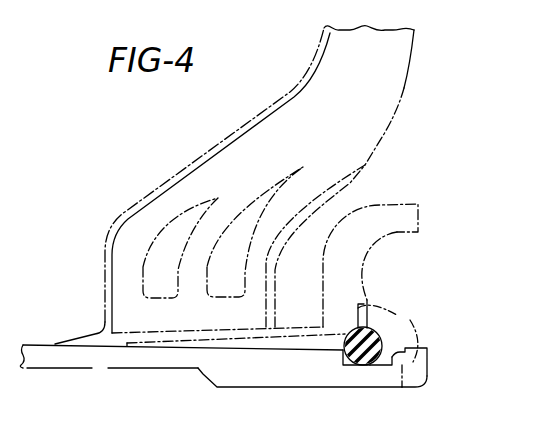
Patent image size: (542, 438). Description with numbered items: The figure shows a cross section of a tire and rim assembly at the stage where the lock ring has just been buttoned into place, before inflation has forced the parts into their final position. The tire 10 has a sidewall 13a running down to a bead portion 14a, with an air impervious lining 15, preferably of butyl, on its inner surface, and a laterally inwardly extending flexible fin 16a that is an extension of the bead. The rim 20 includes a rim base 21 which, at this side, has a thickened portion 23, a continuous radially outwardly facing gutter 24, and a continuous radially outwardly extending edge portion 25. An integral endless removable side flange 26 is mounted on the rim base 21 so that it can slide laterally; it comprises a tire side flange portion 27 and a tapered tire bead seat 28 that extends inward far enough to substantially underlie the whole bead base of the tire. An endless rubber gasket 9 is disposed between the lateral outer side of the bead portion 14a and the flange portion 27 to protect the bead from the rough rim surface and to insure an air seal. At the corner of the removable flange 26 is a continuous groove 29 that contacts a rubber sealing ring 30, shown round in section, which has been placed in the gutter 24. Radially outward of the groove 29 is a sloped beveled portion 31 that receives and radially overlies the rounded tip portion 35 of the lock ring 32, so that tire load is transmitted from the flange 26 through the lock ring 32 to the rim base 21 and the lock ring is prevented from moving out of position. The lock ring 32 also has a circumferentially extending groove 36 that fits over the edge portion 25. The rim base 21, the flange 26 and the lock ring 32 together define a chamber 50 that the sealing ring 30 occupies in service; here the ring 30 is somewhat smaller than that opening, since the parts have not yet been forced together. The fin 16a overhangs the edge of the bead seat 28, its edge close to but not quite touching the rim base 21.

The tire 10 is at (411, 80).
The sidewall 13a is at (386, 135).
The air impervious lining 15 is at (154, 198).
The bead portion 14a is at (160, 259).
The fin 16a is at (85, 306).
The gasket 9 is at (277, 318).
The removable side flange 26 is at (392, 200).
The tire side flange portion 27 is at (397, 232).
The tip portion 35 is at (367, 297).
The beveled portion 31 is at (385, 314).
The lock ring 32 is at (412, 326).
The sealing ring 30 is at (381, 345).
The edge portion 25 is at (428, 355).
The groove 36 is at (433, 365).
The rim 20 is at (100, 374).
The rim base 21 is at (53, 369).
The tapered tire bead seat 28 is at (177, 347).
The thickened portion 23 is at (252, 387).
The groove 29 is at (343, 358).
The chamber 50 is at (380, 360).
The gutter 24 is at (403, 387).